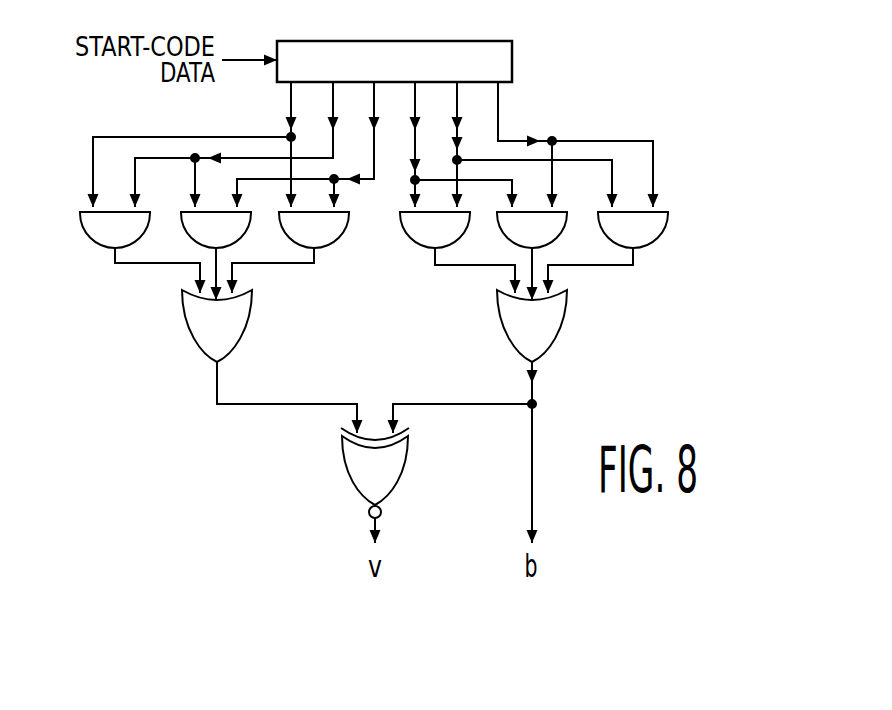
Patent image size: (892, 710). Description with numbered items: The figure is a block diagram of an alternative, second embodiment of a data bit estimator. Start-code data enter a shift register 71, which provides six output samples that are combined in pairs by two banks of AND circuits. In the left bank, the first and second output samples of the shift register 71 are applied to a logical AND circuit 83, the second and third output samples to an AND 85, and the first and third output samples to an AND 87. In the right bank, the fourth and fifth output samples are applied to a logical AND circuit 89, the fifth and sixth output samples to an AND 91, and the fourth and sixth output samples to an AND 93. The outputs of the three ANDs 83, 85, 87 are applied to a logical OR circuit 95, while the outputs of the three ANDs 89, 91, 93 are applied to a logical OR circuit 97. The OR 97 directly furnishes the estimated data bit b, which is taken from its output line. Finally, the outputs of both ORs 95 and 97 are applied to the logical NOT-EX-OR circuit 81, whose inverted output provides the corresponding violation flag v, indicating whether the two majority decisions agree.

The shift register 71 is at (488, 52).
The NOT-EX-OR circuit 81 is at (353, 458).
The logical AND circuit 83 is at (93, 232).
The AND 85 is at (192, 227).
The AND 87 is at (340, 236).
The logical AND circuit 89 is at (420, 237).
The AND 91 is at (547, 232).
The AND 93 is at (652, 238).
The logical OR circuit 95 is at (203, 318).
The logical OR circuit 97 is at (513, 320).